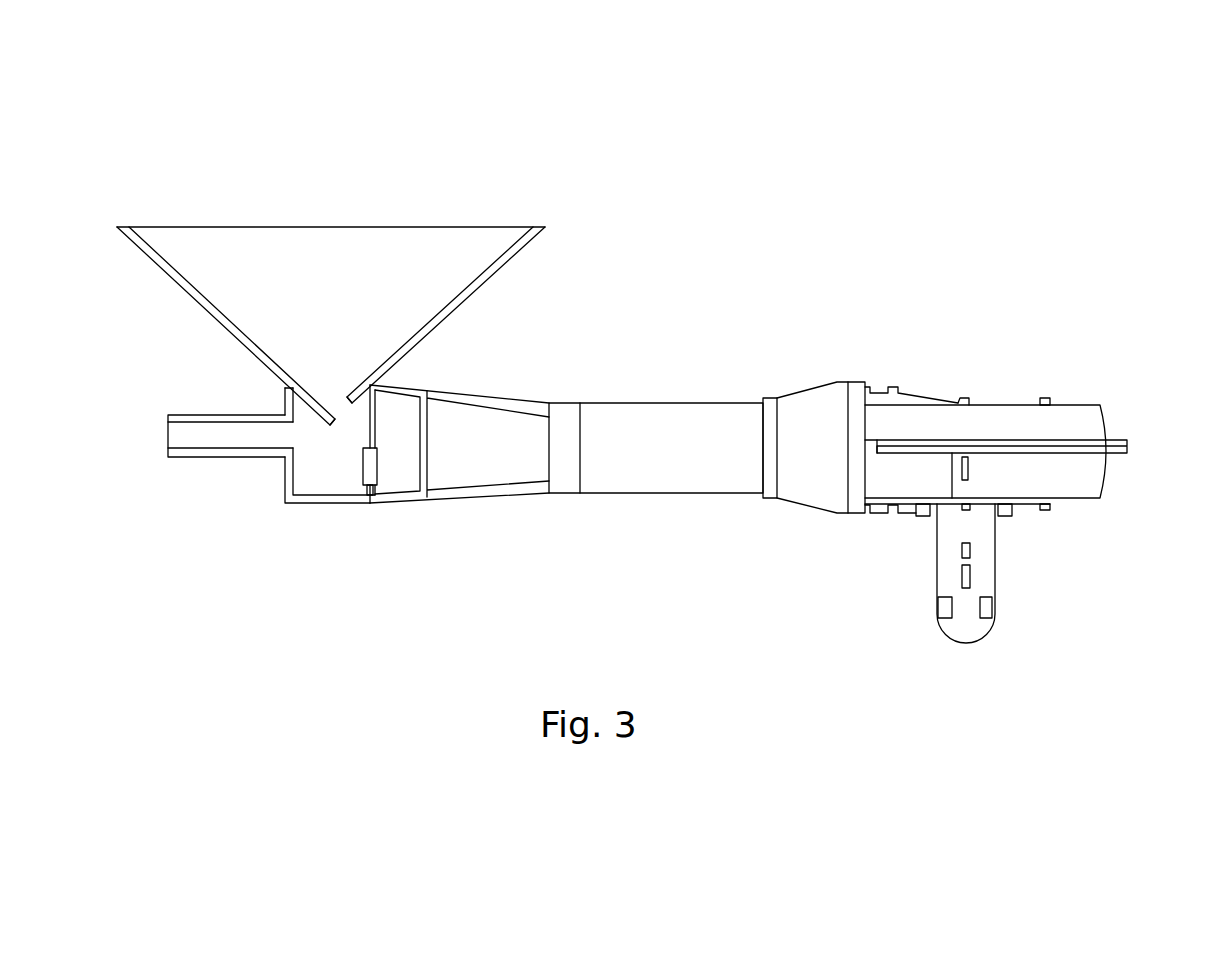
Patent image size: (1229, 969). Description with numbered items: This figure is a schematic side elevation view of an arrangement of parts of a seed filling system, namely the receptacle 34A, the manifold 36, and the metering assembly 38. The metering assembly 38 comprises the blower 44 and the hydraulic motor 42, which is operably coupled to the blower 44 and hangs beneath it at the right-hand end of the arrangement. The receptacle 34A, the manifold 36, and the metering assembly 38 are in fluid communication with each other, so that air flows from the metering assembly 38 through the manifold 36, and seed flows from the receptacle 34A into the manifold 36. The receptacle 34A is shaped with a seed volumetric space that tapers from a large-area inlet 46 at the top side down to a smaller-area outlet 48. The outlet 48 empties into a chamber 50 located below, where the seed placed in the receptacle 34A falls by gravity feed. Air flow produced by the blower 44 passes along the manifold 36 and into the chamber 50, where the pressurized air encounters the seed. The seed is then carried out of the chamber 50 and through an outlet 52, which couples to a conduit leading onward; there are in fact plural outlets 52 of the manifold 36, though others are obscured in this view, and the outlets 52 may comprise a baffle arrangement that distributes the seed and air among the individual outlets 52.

The inlet 46 is at (303, 190).
The receptacle 34A is at (488, 227).
The outlet 48 is at (339, 382).
The chamber 50 is at (341, 482).
The outlet 52 is at (240, 440).
The manifold 36 is at (672, 415).
The metering assembly 38 is at (1091, 537).
The blower 44 is at (1007, 403).
The hydraulic motor 42 is at (938, 557).